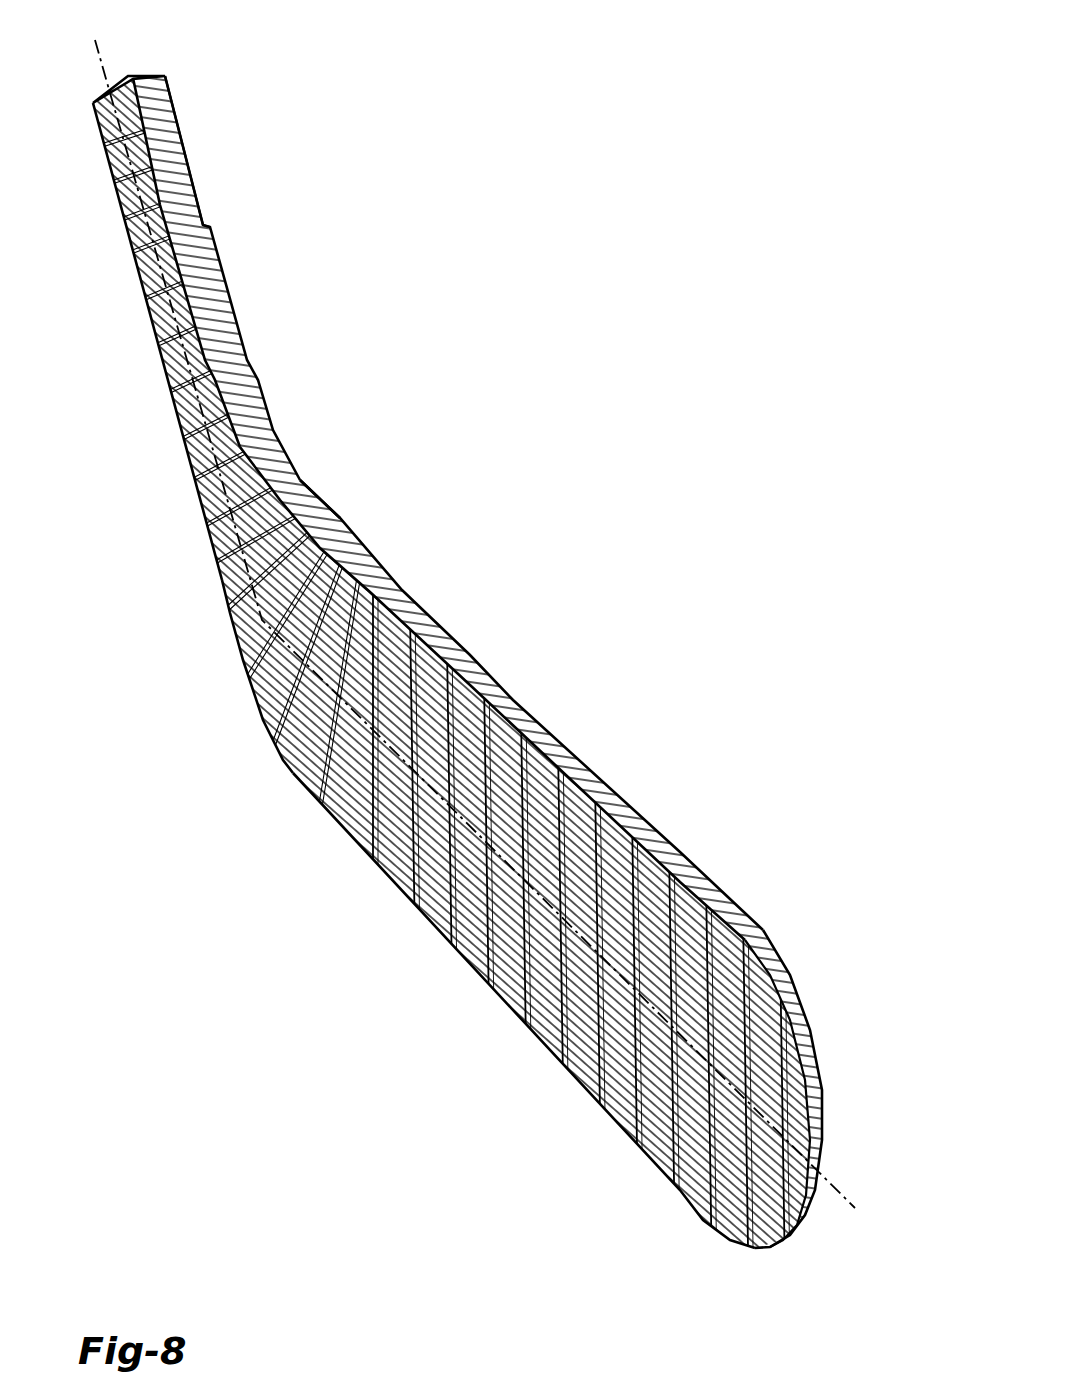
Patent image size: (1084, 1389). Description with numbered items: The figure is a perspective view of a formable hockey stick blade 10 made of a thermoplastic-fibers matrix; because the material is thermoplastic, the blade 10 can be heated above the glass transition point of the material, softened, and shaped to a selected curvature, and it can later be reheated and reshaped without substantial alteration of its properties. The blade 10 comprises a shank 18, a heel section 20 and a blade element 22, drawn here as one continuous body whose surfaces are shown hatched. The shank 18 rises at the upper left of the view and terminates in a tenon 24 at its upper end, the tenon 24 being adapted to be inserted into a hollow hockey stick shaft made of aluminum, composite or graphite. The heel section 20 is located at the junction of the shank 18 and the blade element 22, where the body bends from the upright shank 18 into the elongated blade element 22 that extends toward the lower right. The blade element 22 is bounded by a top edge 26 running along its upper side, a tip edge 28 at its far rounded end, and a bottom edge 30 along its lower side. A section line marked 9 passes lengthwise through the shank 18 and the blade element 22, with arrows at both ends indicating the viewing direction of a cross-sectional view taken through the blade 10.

The section line 9- 9 is at (160, 30).
The formable hockey stick blade 10 is at (493, 658).
The shank 18 is at (216, 341).
The heel section 20 is at (323, 762).
The blade element 22 is at (555, 987).
The tenon 24 is at (167, 144).
The top edge 26 is at (600, 773).
The tip edge 28 is at (823, 1117).
The bottom edge 30 is at (683, 1192).